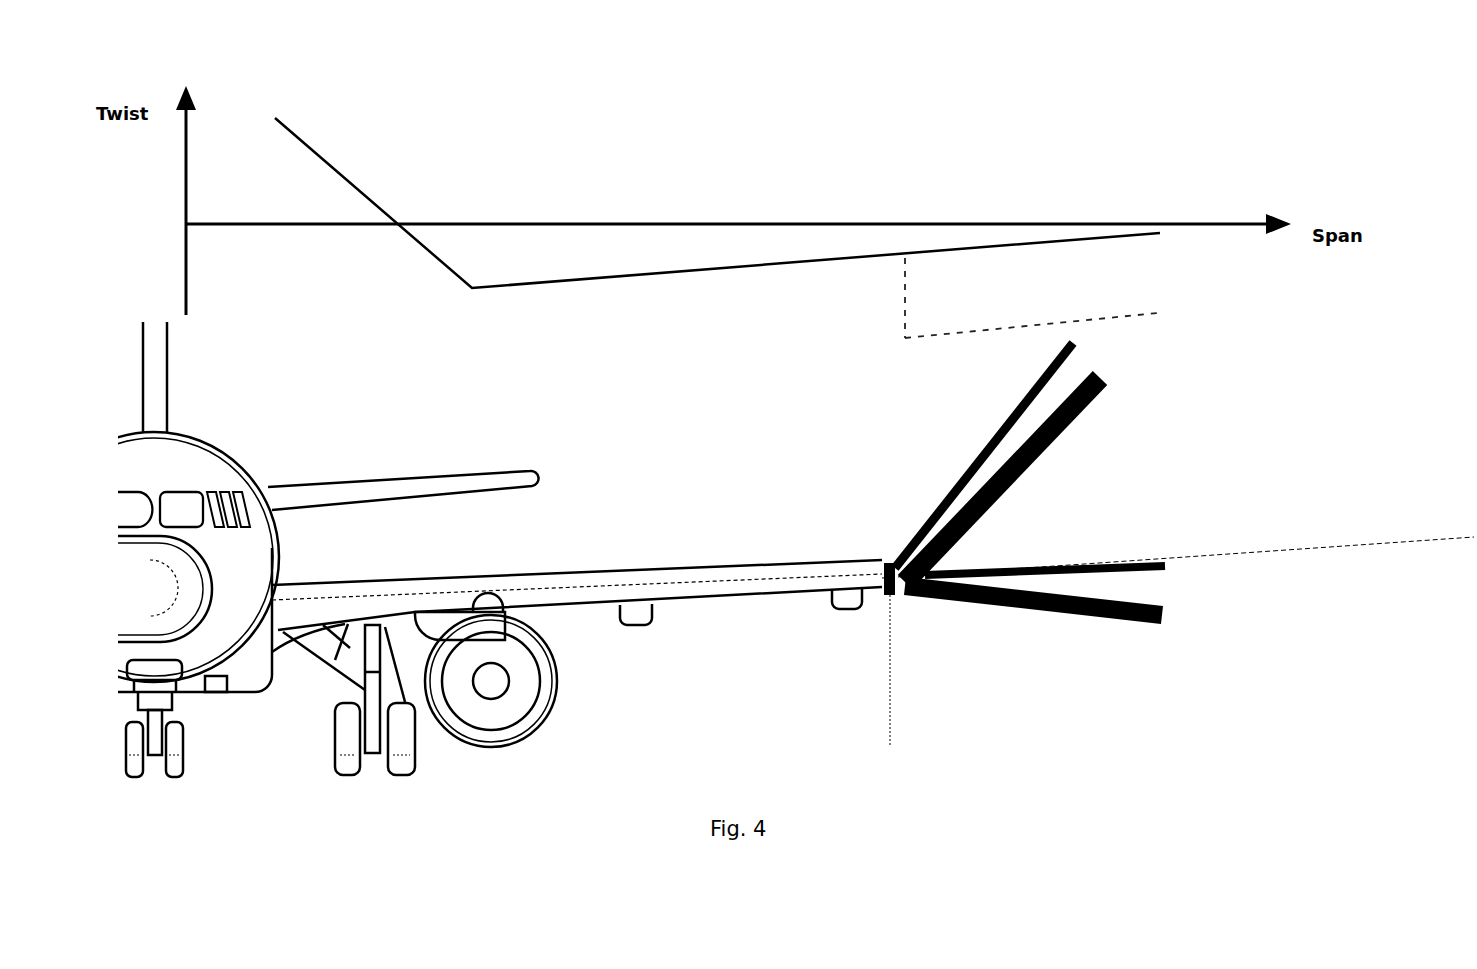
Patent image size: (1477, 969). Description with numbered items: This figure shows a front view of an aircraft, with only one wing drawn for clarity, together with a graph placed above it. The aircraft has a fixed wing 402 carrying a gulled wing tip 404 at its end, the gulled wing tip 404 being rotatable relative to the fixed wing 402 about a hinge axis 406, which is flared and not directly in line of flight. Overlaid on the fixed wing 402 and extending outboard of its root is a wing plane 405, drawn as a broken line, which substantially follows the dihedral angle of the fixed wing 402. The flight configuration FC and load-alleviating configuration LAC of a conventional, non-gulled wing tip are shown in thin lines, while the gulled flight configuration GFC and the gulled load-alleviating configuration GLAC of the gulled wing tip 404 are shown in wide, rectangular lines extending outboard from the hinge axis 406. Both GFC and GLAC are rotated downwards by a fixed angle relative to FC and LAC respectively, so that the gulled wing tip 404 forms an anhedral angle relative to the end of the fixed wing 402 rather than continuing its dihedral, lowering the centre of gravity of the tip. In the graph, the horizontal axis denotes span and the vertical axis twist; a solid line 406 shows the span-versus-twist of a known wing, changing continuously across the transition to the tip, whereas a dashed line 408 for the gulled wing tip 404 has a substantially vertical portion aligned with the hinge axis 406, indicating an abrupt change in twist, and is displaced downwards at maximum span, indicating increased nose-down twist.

The fixed wing 402 is at (640, 575).
The gulled wing tip 404 is at (998, 642).
The wing plane 405 is at (1245, 550).
The hinge axis 406 is at (318, 142).
The dashed line 408 is at (1093, 310).
The load-alleviating configuration LAC is at (990, 440).
The gulled load-alleviating configuration GLAC is at (1055, 437).
The flight configuration FC is at (1162, 572).
The gulled flight configuration GFC is at (1153, 622).